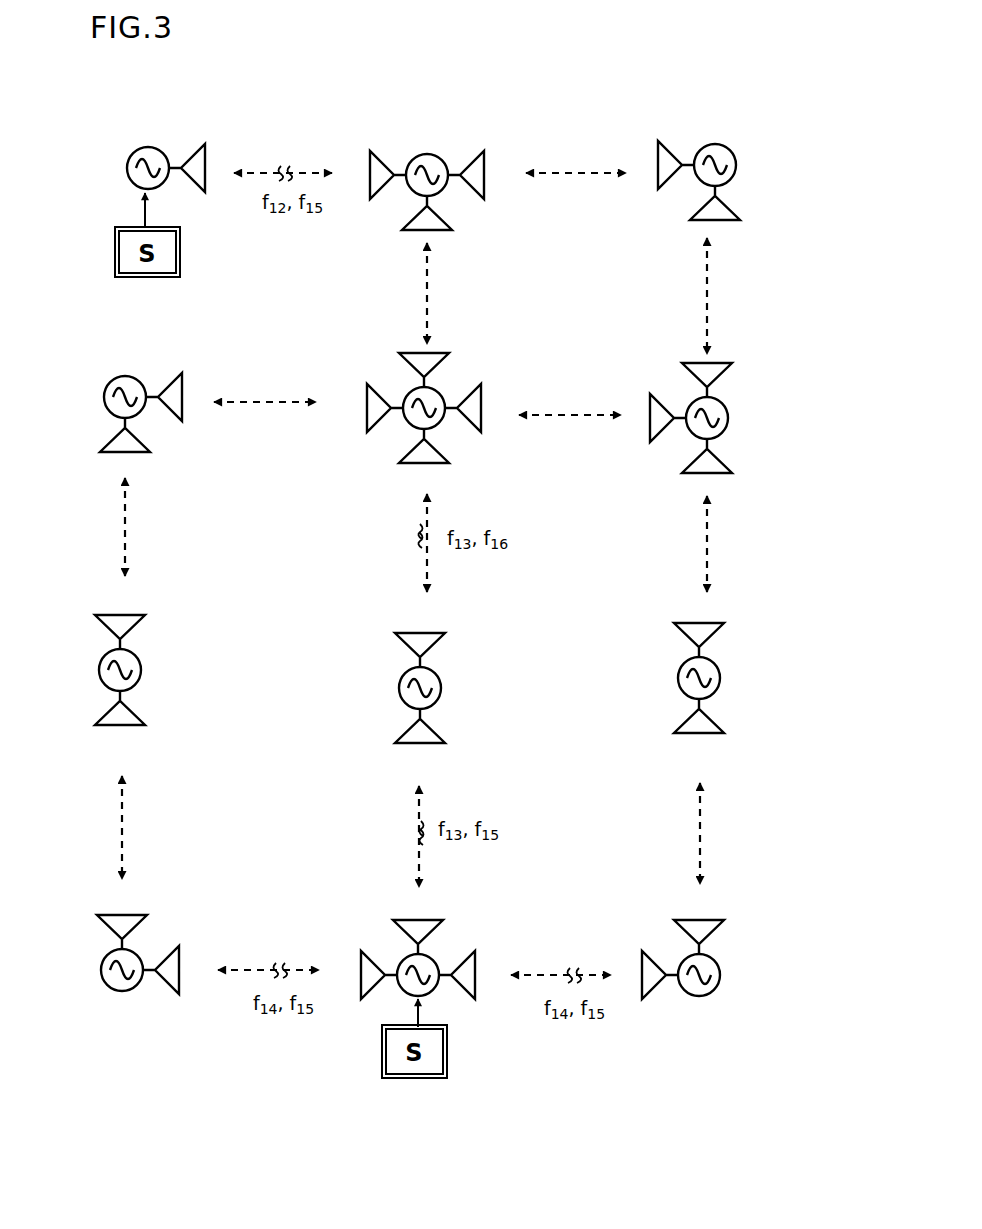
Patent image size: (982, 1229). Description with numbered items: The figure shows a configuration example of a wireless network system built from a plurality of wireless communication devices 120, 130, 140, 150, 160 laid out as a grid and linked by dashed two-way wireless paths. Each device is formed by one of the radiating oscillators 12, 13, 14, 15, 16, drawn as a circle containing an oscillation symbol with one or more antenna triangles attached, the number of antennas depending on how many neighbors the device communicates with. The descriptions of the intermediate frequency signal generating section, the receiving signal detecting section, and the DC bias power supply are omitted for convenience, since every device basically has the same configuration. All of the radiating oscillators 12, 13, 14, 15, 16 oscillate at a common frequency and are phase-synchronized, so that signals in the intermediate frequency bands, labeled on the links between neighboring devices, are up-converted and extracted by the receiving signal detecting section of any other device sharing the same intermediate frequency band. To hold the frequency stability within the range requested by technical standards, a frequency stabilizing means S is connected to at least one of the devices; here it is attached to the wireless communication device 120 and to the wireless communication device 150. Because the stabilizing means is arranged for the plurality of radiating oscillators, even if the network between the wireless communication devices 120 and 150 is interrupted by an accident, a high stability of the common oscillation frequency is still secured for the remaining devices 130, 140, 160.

The radiating oscillator 12 is at (130, 148).
The wireless communication device 120 is at (182, 146).
The radiating oscillator 13 is at (145, 677).
The wireless communication device 130 is at (146, 697).
The radiating oscillator 14 is at (738, 150).
The wireless communication device 140 is at (745, 172).
The radiating oscillator 15 is at (431, 153).
The wireless communication device 150 is at (411, 146).
The radiating oscillator 16 is at (410, 390).
The wireless communication device 160 is at (386, 442).